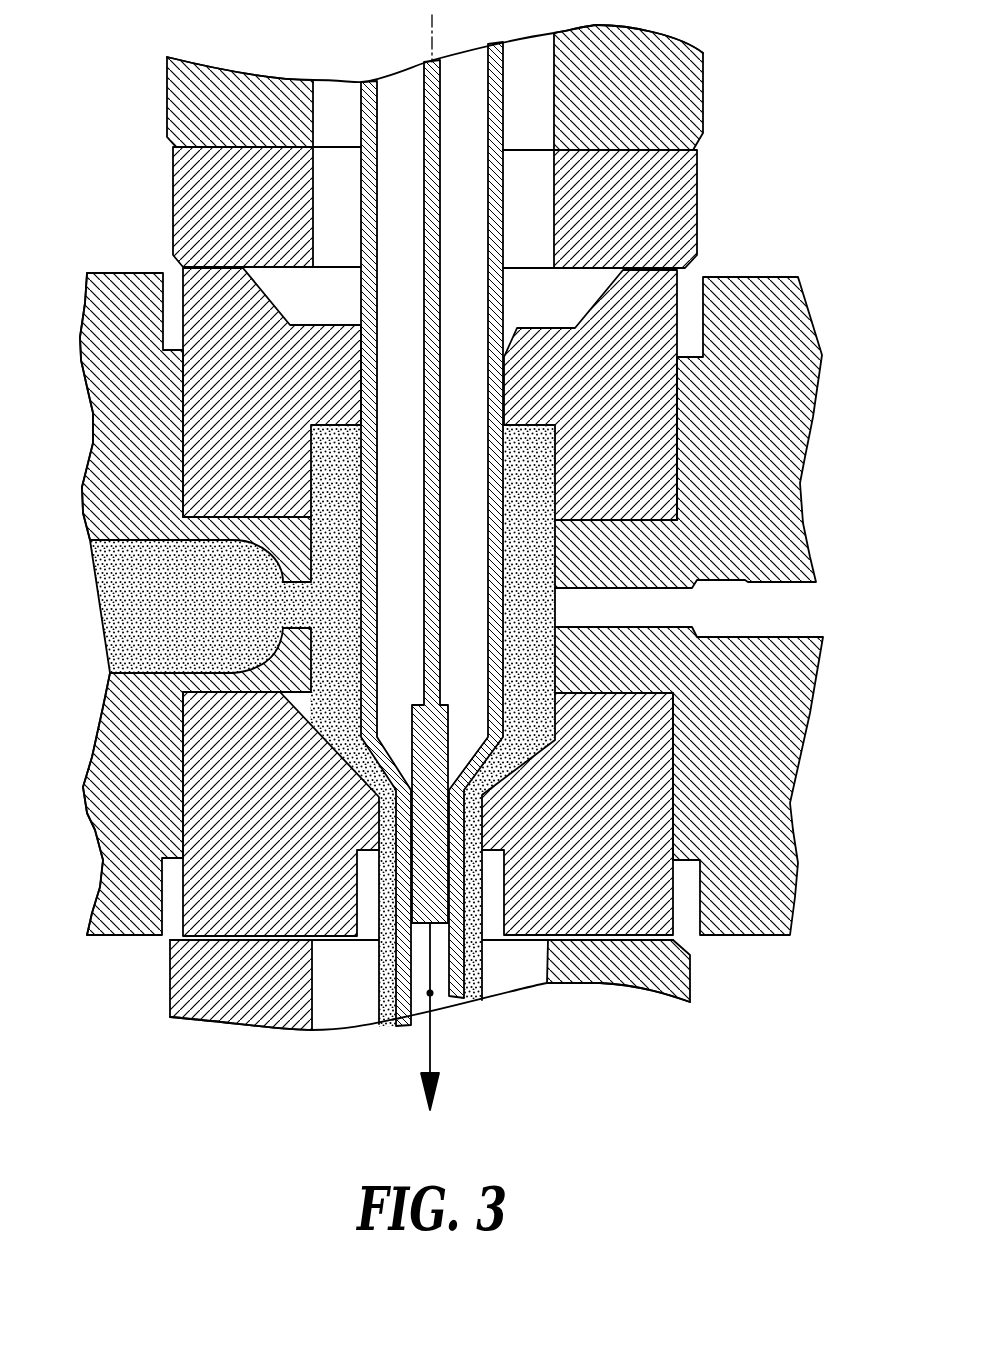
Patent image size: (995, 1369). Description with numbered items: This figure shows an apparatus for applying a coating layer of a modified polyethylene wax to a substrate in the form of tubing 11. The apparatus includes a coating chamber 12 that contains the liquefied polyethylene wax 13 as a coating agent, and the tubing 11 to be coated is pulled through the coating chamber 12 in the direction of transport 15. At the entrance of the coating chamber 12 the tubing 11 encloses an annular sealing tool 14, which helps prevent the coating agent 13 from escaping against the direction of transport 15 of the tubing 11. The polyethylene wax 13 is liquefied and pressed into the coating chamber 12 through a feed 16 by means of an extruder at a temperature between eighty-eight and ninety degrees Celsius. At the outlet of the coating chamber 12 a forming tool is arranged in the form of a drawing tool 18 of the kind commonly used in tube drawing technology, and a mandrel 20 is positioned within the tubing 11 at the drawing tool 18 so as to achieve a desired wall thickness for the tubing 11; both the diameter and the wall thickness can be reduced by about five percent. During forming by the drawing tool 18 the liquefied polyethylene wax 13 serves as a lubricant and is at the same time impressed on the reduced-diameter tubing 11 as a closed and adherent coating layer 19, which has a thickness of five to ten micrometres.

The tubing 11 is at (363, 250).
The coating chamber 12 is at (315, 488).
The polyethylene wax 13 is at (98, 577).
The sealing tool 14 is at (667, 328).
The direction of transport 15 is at (433, 1035).
The feed 16 is at (132, 700).
The drawing tool 18 is at (673, 773).
The coating layer 19 is at (378, 1007).
The mandrel 20 is at (441, 467).